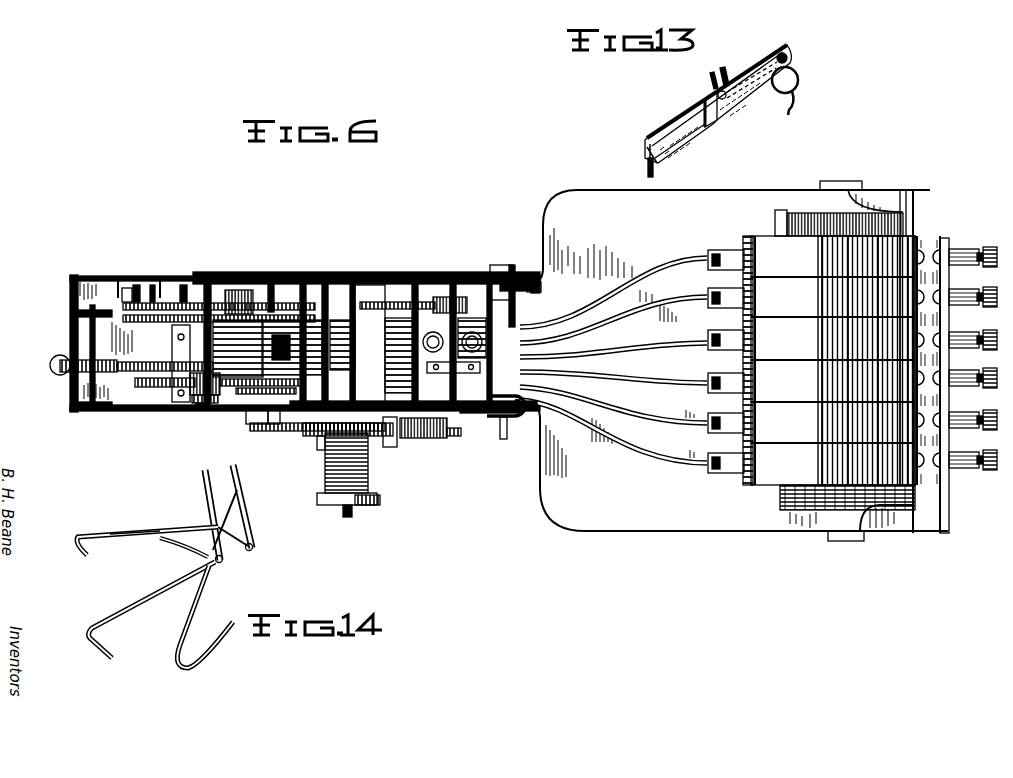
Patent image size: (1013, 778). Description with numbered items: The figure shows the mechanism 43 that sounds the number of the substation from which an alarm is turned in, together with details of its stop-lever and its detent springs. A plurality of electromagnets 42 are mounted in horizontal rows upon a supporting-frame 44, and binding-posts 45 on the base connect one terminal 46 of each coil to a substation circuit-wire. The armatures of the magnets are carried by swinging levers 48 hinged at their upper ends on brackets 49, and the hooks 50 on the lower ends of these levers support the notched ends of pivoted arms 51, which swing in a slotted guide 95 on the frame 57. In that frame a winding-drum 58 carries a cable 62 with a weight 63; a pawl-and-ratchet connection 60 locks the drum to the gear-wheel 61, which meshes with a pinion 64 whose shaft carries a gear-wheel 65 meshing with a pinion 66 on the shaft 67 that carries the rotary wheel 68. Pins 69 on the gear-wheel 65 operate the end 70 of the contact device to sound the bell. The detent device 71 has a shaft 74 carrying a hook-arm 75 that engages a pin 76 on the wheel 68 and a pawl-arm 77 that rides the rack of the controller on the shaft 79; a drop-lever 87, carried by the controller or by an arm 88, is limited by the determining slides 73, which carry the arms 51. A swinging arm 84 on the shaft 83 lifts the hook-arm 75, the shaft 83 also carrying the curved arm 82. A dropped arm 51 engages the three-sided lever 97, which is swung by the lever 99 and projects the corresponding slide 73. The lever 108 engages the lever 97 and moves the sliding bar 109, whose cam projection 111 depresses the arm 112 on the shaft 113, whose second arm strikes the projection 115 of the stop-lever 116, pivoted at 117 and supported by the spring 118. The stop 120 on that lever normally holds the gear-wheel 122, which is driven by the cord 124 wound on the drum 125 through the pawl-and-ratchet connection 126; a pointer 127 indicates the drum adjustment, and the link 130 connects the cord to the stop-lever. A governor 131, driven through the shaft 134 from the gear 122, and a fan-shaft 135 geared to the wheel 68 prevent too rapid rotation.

In FIG. 6, the electromagnet 42 is at (822, 512).
In FIG. 6, the mechanism 43 is at (807, 370).
In FIG. 6, the supporting-frame 44 is at (922, 534).
In FIG. 6, the binding-posts 45 is at (956, 248).
In FIG. 6, the terminal 46 is at (936, 470).
In FIG. 6, the swinging levers 48 is at (732, 250).
In FIG. 6, the supporting arms or brackets 49 is at (833, 337).
In FIG. 6, the projections or hooks 50 is at (710, 254).
In FIG. 6, the pivoted arms 51 is at (598, 306).
In FIG. 6, the frame 57 is at (266, 288).
In FIG. 6, the winding-drum 58 is at (202, 404).
In FIG. 6, the pawl-and-ratchet connection 60 is at (172, 330).
In FIG. 6, the gear-wheel 61 is at (124, 322).
In FIG. 6, the cable 62 is at (130, 378).
In FIG. 6, the weight 63 is at (55, 375).
In FIG. 6, the pinion 64 is at (198, 282).
In FIG. 6, the gear-wheel 65 is at (292, 290).
In FIG. 6, the pinion 66 is at (240, 288).
In FIG. 6, the shaft 67 is at (230, 392).
In FIG. 6, the rotary wheel, gear, or similar element 68 is at (144, 390).
In FIG. 6, the projections or pins 69 is at (172, 282).
In FIG. 6, the end of contact device 70 is at (148, 277).
In FIG. 14, the detent device 71 is at (152, 531).
In FIG. 6, the determining elements or slides 73 is at (382, 338).
In FIG. 6, the shaft 74 is at (340, 290).
In FIG. 14, the shaft 74 is at (207, 491).
In FIG. 6, the arm 75 is at (252, 428).
In FIG. 14, the arm 75 is at (118, 537).
In FIG. 6, the pin 76 is at (186, 396).
In FIG. 6, the pawl-arm 77 is at (248, 396).
In FIG. 14, the pawl-arm 77 is at (124, 604).
In FIG. 6, the shaft 79 is at (312, 438).
In FIG. 6, the arm 82 is at (348, 330).
In FIG. 14, the arm 82 is at (192, 606).
In FIG. 6, the shaft 83 is at (365, 290).
In FIG. 14, the shaft 83 is at (254, 526).
In FIG. 6, the swinging arm 84 is at (312, 290).
In FIG. 14, the swinging arm 84 is at (180, 547).
In FIG. 6, the drop-lever 87 is at (268, 282).
In FIG. 6, the arm 88 is at (273, 396).
In FIG. 6, the slotted guide 95 is at (500, 318).
In FIG. 6, the lever 97 is at (510, 268).
In FIG. 6, the lever 99 is at (504, 438).
In FIG. 6, the lever 108 is at (542, 288).
In FIG. 6, the sliding bar 109 is at (472, 292).
In FIG. 6, the cam or trip projection 111 is at (402, 290).
In FIG. 6, the arm 112 is at (437, 292).
In FIG. 6, the shaft 113 is at (466, 288).
In FIG. 13, the projection 115 is at (726, 70).
In FIG. 6, the stop-lever 116 is at (452, 420).
In FIG. 13, the stop-lever 116 is at (718, 104).
In FIG. 13, the pivot 117 is at (788, 57).
In FIG. 13, the spring 118 is at (798, 88).
In FIG. 13, the stop or projection 120 is at (714, 121).
In FIG. 6, the gear-wheel 122 is at (256, 440).
In FIG. 6, the cord, cable, or other flexible connection 124 is at (368, 476).
In FIG. 6, the drum 125 is at (380, 498).
In FIG. 6, the pawl-and-ratchet connection 126 is at (320, 452).
In FIG. 6, the pointer or hand 127 is at (325, 500).
In FIG. 13, the link 130 is at (648, 168).
In FIG. 6, the governor 131 is at (437, 440).
In FIG. 6, the shaft 134 is at (430, 298).
In FIG. 6, the fan-shaft 135 is at (204, 412).